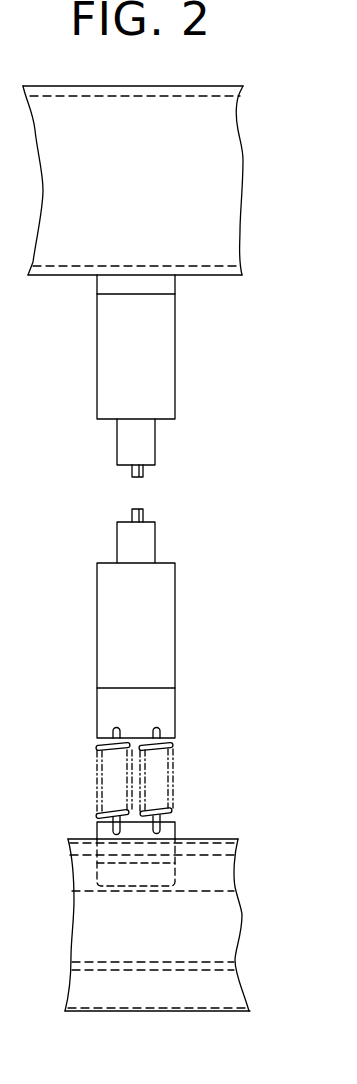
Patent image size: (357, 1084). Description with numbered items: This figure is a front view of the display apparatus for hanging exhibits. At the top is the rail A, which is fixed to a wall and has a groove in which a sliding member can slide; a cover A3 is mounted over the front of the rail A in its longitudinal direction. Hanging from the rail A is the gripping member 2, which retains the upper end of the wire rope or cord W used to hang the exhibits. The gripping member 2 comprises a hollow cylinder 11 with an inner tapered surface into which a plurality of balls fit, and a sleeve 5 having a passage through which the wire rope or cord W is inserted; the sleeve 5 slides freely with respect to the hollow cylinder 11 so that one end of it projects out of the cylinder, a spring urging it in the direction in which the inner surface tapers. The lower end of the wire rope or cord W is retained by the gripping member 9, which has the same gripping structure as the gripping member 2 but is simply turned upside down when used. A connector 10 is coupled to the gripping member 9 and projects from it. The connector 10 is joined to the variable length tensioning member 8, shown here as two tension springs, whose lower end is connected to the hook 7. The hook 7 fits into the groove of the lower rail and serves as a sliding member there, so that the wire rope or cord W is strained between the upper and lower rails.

The rail A is at (155, 171).
The cover A3 is at (228, 168).
The gripping member 2 is at (148, 376).
The hollow cylinder 11 is at (105, 352).
The sleeve 5 is at (148, 450).
The wire rope or cord W is at (144, 511).
The gripping member 9 is at (169, 630).
The connector 10 is at (165, 718).
The variable length tensioning member 8 is at (175, 779).
The hook 7 is at (172, 872).